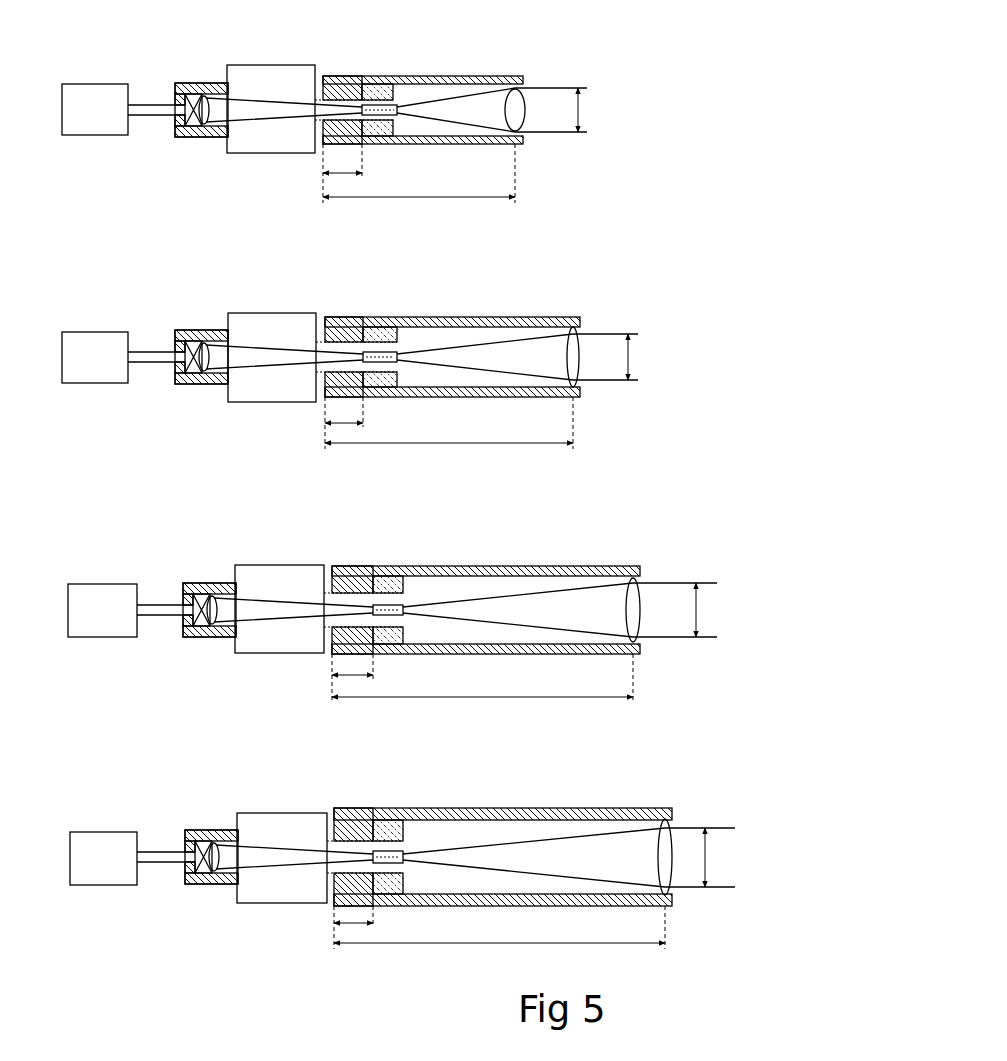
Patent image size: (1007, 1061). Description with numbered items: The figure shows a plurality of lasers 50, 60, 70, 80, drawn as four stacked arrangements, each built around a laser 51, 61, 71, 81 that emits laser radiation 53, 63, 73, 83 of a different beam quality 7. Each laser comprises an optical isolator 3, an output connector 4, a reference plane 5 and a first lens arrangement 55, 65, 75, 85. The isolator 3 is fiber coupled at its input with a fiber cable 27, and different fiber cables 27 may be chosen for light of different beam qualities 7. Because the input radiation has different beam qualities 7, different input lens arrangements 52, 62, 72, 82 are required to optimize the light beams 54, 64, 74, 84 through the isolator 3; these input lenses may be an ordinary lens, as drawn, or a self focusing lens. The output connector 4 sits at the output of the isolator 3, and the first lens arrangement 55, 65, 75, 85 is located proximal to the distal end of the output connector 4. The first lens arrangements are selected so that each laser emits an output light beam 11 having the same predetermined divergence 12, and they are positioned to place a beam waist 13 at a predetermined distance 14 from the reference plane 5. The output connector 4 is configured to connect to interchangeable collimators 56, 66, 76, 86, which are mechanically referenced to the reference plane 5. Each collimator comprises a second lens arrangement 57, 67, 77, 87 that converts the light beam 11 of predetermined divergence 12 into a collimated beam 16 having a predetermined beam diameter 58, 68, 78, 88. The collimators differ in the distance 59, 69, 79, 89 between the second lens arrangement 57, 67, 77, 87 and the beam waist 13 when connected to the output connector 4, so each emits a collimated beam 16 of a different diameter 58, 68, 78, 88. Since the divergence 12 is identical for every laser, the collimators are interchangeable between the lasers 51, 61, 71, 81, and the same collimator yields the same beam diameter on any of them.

The optical isolator 3 is at (285, 65).
The output connector 4 is at (345, 75).
The reference plane 5 is at (322, 173).
The beam quality 7 is at (73, 97).
The laser radiation 11 is at (447, 120).
The predetermined beam divergence 12 is at (483, 95).
The beam waist 13 is at (363, 103).
The predetermined distance 14 is at (345, 178).
The collimated beam 16 is at (562, 90).
The fiber cable 27 is at (158, 115).
The laser 50 is at (146, 198).
The laser 51 is at (88, 137).
The input lens arrangement 52 is at (200, 120).
The laser radiation 53 is at (185, 102).
The light beam 54 is at (215, 88).
The first lens arrangement 55 is at (407, 97).
The collimator 56 is at (447, 76).
The second lens arrangement 57 is at (524, 110).
The predetermined beam diameter 58 is at (583, 115).
The distance 59 is at (415, 202).
The laser 60 is at (147, 442).
The laser 61 is at (88, 385).
The input lens arrangement 62 is at (200, 368).
The laser radiation 63 is at (185, 350).
The light beam 64 is at (215, 336).
The first lens arrangement 65 is at (410, 343).
The collimator 66 is at (453, 318).
The second lens arrangement 67 is at (581, 357).
The predetermined beam diameter 68 is at (638, 360).
The distance 69 is at (415, 448).
The laser 70 is at (155, 707).
The laser 71 is at (95, 638).
The input lens arrangement 72 is at (205, 622).
The laser radiation 73 is at (193, 603).
The light beam 74 is at (222, 590).
The first lens arrangement 75 is at (410, 595).
The collimator 76 is at (455, 567).
The second lens arrangement 77 is at (641, 612).
The predetermined beam diameter 78 is at (710, 615).
The distance 79 is at (424, 702).
The laser 80 is at (155, 915).
The laser 81 is at (97, 886).
The input lens arrangement 82 is at (207, 872).
The laser radiation 83 is at (195, 850).
The light beam 84 is at (224, 838).
The first lens arrangement 85 is at (410, 840).
The collimator 86 is at (460, 810).
The second lens arrangement 87 is at (673, 840).
The predetermined beam diameter 88 is at (722, 862).
The distance 89 is at (424, 948).